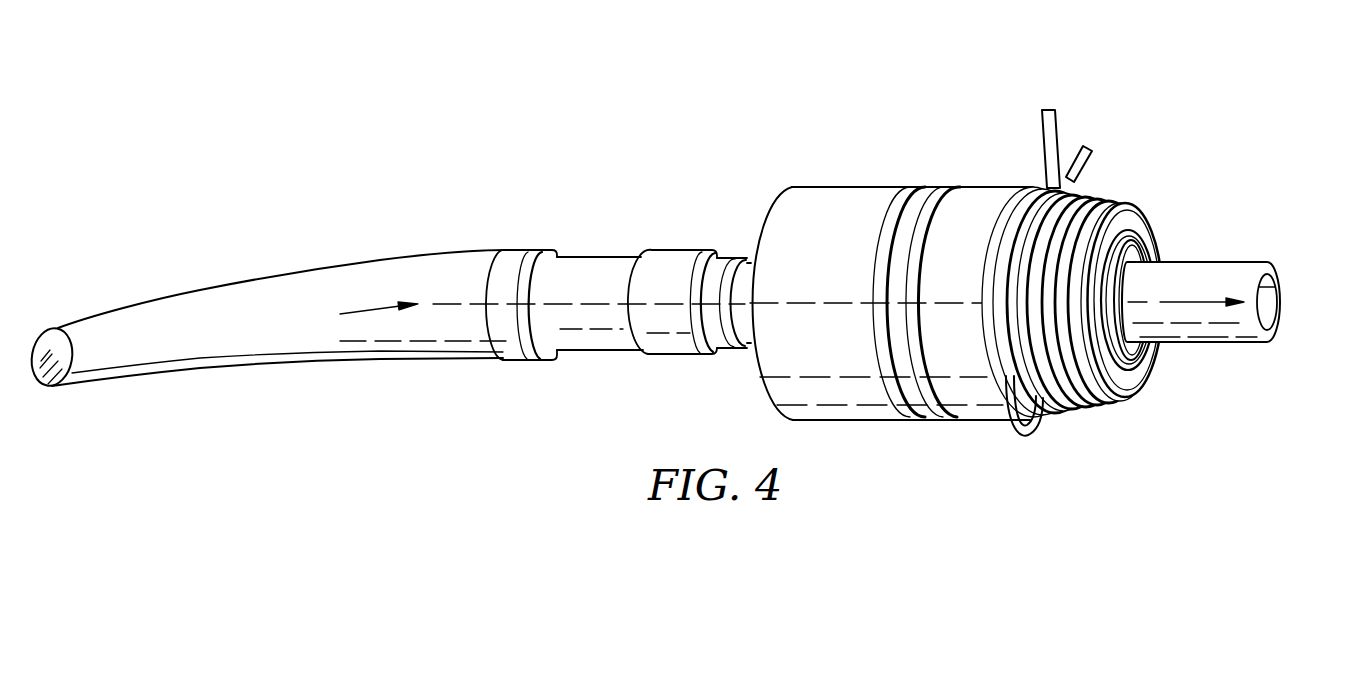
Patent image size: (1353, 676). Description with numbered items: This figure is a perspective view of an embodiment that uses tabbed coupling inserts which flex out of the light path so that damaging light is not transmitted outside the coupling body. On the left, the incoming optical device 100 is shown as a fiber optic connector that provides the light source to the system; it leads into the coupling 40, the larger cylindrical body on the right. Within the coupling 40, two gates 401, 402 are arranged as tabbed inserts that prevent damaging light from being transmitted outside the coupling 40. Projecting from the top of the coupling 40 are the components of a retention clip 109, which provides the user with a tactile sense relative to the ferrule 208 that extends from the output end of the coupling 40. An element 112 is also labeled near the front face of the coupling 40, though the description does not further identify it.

The incoming optical device 100 is at (735, 222).
The coupling 40 is at (1127, 98).
The retention clip 109 is at (1047, 138).
The coupling flange 112 is at (1101, 402).
The ferrule 208 is at (1220, 333).
The gate 401 is at (957, 418).
The gate 402 is at (925, 418).